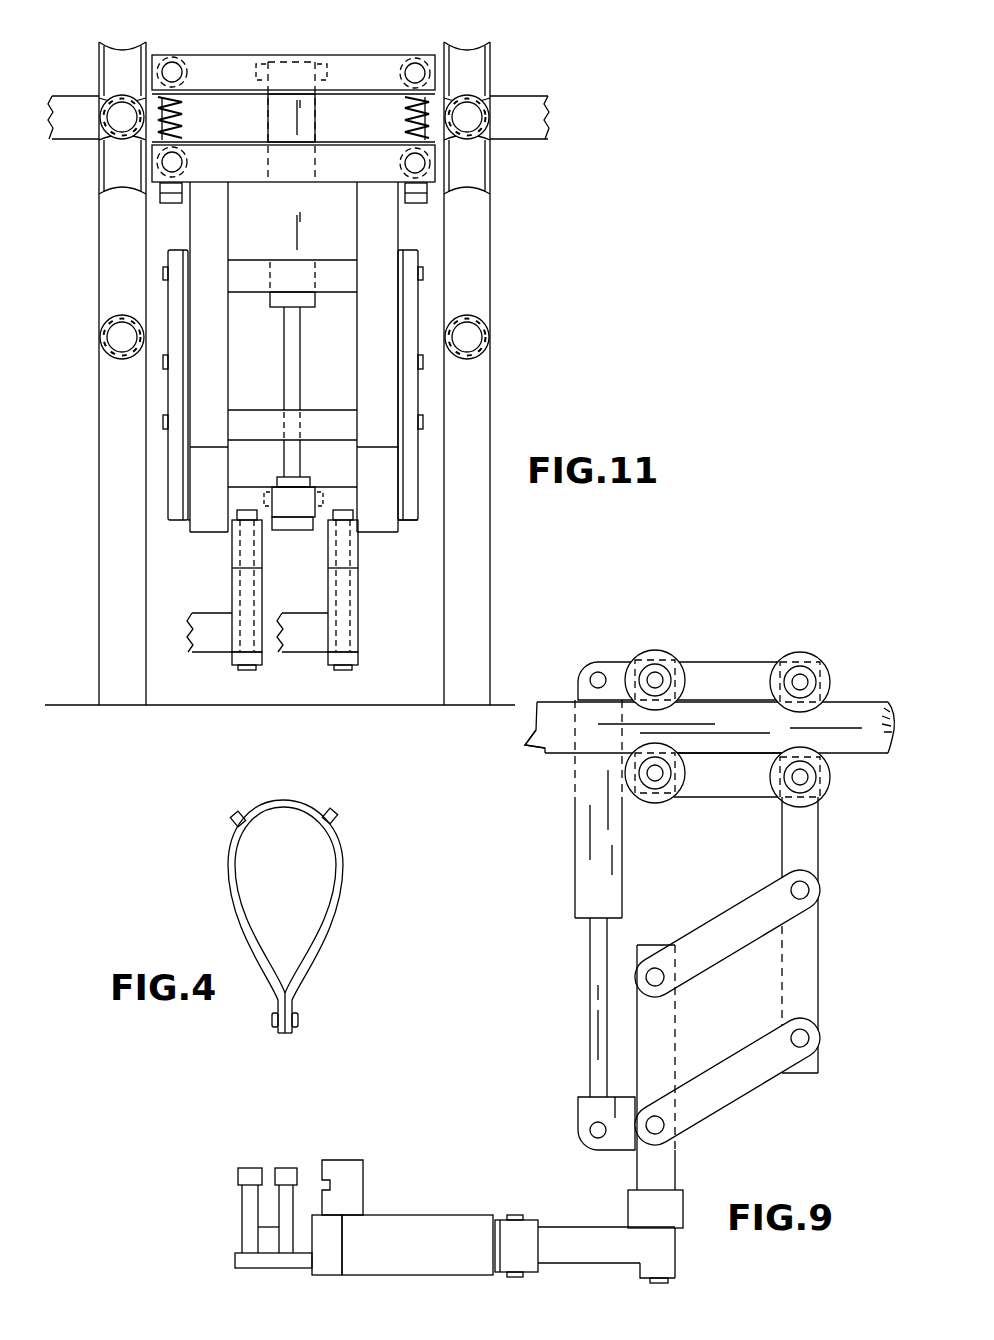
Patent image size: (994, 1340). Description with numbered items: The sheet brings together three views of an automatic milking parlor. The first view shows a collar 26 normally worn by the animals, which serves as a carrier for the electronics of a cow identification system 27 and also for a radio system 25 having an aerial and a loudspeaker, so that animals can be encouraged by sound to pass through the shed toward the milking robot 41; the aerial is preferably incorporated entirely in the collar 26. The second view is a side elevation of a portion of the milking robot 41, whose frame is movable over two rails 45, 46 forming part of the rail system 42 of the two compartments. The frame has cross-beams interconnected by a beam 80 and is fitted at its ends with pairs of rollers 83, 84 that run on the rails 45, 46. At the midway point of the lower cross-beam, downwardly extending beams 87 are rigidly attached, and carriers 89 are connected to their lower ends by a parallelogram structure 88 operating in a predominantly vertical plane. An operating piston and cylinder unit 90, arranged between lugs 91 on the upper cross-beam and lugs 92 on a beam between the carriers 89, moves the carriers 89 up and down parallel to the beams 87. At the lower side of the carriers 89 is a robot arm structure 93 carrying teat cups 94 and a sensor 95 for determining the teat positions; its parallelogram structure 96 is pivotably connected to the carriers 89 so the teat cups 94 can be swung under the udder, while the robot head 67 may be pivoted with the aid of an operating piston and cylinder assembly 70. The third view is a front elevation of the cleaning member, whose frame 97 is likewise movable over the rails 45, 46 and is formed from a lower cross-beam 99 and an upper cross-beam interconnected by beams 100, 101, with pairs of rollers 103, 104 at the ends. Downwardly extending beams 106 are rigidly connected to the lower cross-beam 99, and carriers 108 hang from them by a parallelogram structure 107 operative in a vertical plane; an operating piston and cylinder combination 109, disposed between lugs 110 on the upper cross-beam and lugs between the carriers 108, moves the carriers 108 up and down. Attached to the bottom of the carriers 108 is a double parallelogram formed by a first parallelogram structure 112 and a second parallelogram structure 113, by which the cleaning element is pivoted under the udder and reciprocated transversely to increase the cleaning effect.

In FIG. 4, the radio system 25 is at (333, 813).
In FIG. 4, the collar 26 is at (338, 913).
In FIG. 4, the cow identification system 27 is at (237, 813).
In FIG. 9, the milking robot 41 is at (497, 1042).
In FIG. 11, the rail system 42 is at (552, 111).
In FIG. 11, the rail 45 is at (488, 114).
In FIG. 11, the rail 46 is at (100, 130).
In FIG. 9, the rail 46 is at (557, 743).
In FIG. 9, the robot head 67 is at (417, 1217).
In FIG. 9, the operating piston and cylinder assembly 70 is at (768, 652).
In FIG. 9, the beam 80 is at (720, 661).
In FIG. 9, the pair of rollers 83 is at (671, 655).
In FIG. 9, the pair of rollers 84 is at (827, 672).
In FIG. 9, the downwardly extending beams 87 is at (810, 971).
In FIG. 9, the parallelogram structure 88 is at (736, 918).
In FIG. 9, the carriers 89 is at (665, 1168).
In FIG. 9, the operating piston and cylinder unit 90 is at (580, 880).
In FIG. 9, the lugs 91 is at (608, 663).
In FIG. 9, the lugs 92 is at (583, 1143).
In FIG. 9, the robot arm structure 93 is at (551, 1216).
In FIG. 9, the teat cups 94 is at (248, 1166).
In FIG. 9, the sensor 95 is at (348, 1162).
In FIG. 9, the parallelogram structure 96 is at (585, 1238).
In FIG. 11, the frame 97 is at (359, 52).
In FIG. 11, the lower cross-beam 99 is at (229, 60).
In FIG. 11, the beam 100 is at (418, 50).
In FIG. 11, the beam 101 is at (180, 54).
In FIG. 11, the pair of rollers 103 is at (118, 50).
In FIG. 11, the pair of rollers 104 is at (473, 62).
In FIG. 11, the downwardly extending beams 106 is at (215, 375).
In FIG. 11, the parallelogram structure 107 is at (175, 297).
In FIG. 11, the carriers 108 is at (215, 512).
In FIG. 11, the operating piston and cylinder combination 109 is at (248, 250).
In FIG. 11, the lugs 110 is at (318, 52).
In FIG. 11, the first parallelogram structure 112 is at (232, 556).
In FIG. 11, the second parallelogram structure 113 is at (212, 637).